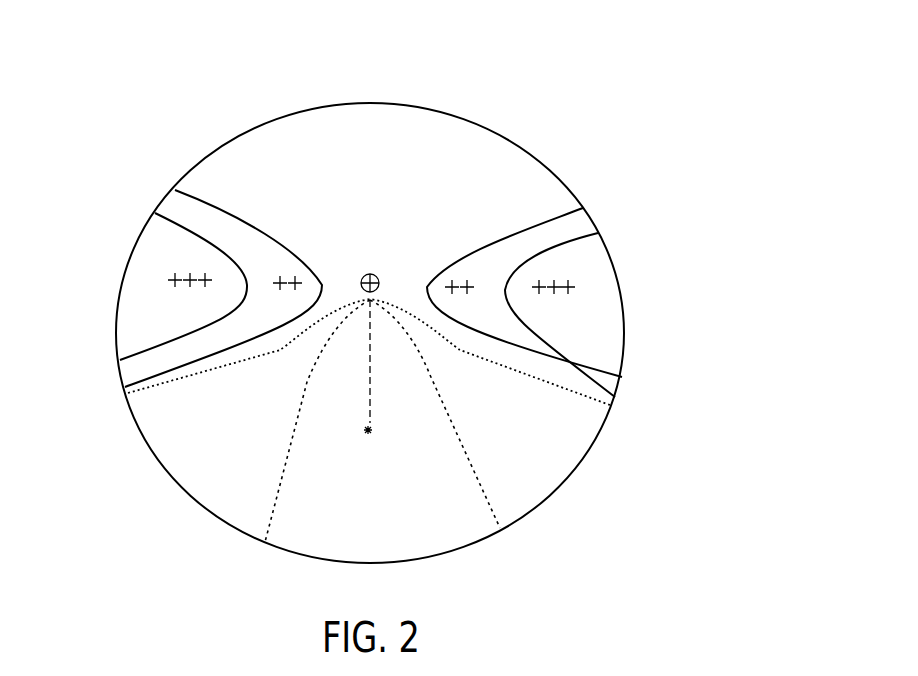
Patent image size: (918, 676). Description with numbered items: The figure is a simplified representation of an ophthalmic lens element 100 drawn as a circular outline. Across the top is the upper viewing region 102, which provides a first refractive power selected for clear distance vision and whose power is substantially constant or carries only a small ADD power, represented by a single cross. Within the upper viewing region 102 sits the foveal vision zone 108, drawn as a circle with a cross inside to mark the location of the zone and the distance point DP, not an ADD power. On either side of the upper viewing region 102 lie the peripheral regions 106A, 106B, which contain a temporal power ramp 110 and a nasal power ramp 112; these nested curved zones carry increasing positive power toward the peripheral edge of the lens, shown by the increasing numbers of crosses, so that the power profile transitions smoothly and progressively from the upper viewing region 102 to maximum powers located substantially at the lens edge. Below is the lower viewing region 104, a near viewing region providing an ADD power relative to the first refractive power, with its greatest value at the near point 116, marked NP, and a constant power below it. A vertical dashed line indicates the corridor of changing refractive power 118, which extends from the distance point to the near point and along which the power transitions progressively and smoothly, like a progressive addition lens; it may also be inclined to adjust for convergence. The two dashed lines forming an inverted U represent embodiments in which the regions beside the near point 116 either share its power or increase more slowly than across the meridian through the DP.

The ophthalmic lens element 100 is at (685, 123).
The upper viewing region 102 is at (393, 170).
The lower viewing region 104 is at (392, 546).
The peripheral region 106A is at (112, 298).
The peripheral region 106B is at (625, 320).
The foveal vision zone 108 is at (363, 265).
The temporal power ramp 110 is at (168, 327).
The nasal power ramp 112 is at (603, 334).
The near point 116 is at (392, 500).
The corridor of changing refractive power 118 is at (368, 360).